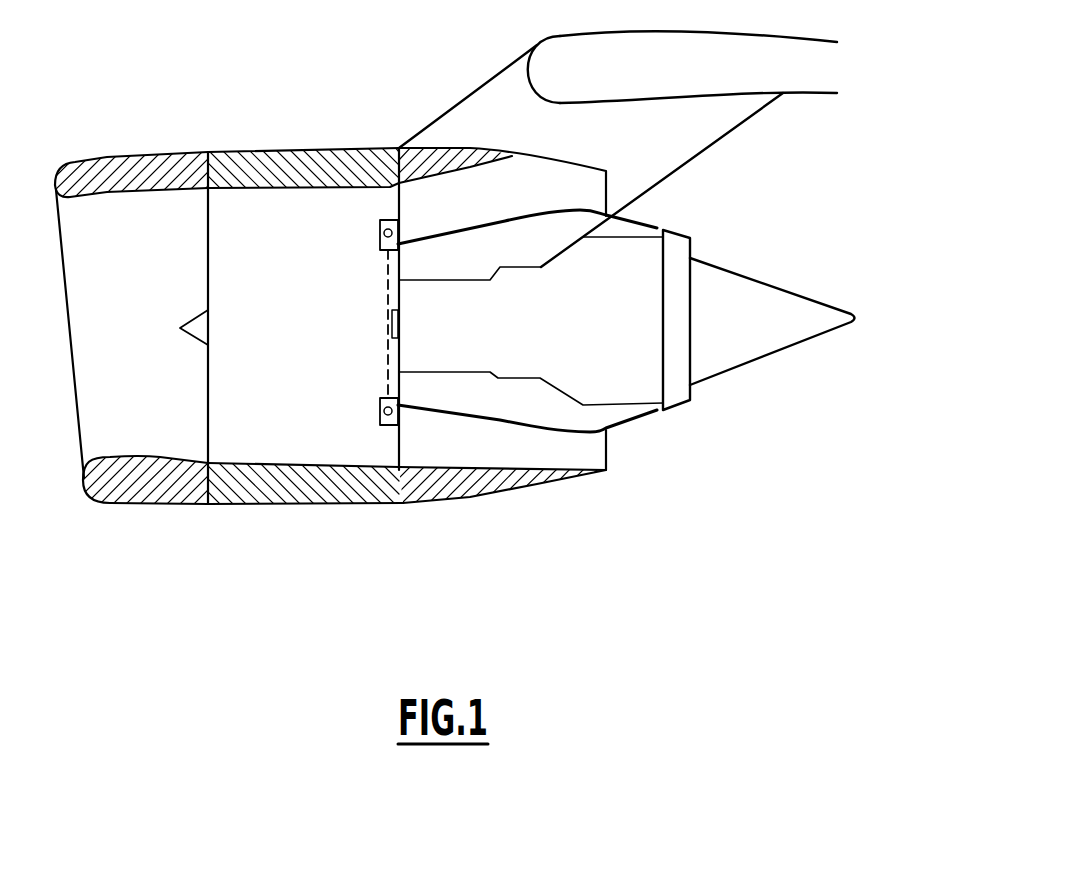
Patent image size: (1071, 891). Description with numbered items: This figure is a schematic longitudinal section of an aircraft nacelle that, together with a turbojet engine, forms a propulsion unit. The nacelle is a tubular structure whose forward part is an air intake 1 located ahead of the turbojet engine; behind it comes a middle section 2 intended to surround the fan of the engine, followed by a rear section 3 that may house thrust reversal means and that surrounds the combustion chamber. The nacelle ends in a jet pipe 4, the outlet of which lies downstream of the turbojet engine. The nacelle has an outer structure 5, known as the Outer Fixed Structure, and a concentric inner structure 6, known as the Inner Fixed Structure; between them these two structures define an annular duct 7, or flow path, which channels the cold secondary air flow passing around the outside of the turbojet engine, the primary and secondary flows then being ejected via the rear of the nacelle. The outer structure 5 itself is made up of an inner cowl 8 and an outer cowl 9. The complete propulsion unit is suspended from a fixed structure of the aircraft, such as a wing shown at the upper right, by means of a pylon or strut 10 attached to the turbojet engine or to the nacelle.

The air intake 1 is at (153, 430).
The middle section 2 is at (293, 435).
The rear section 3 is at (465, 286).
The annular duct 7 is at (465, 286).
The jet pipe 4 is at (753, 332).
The outer structure 5 is at (427, 160).
The inner structure 6 is at (508, 220).
The inner cowl 8 is at (457, 182).
The outer cowl 9 is at (462, 147).
The pylon or strut 10 is at (710, 112).